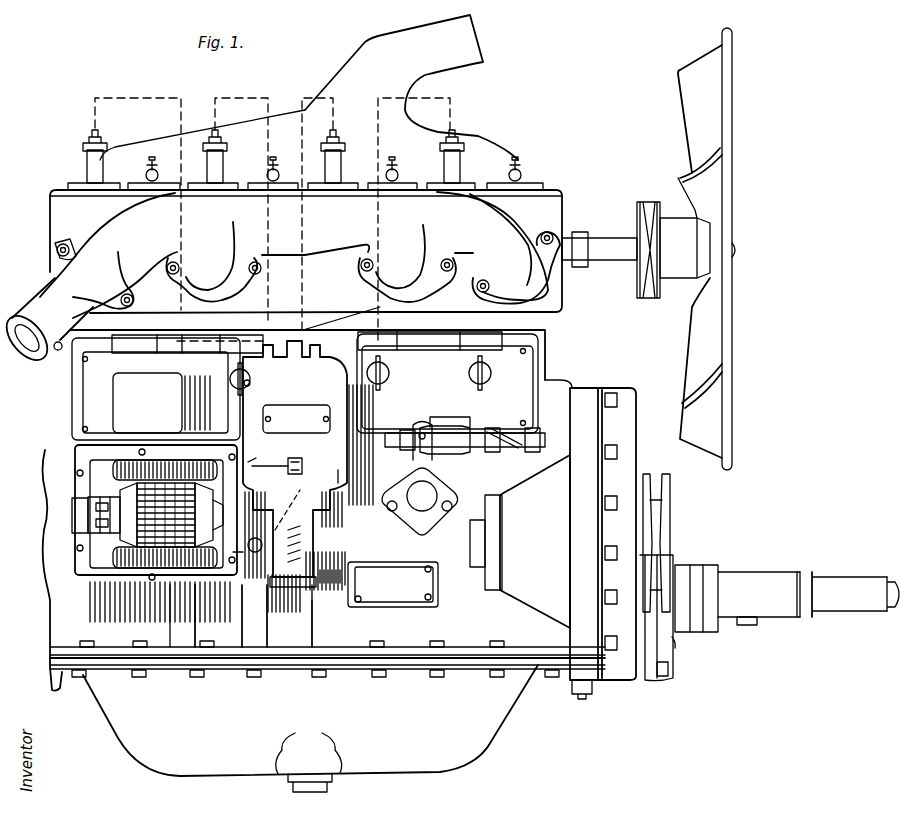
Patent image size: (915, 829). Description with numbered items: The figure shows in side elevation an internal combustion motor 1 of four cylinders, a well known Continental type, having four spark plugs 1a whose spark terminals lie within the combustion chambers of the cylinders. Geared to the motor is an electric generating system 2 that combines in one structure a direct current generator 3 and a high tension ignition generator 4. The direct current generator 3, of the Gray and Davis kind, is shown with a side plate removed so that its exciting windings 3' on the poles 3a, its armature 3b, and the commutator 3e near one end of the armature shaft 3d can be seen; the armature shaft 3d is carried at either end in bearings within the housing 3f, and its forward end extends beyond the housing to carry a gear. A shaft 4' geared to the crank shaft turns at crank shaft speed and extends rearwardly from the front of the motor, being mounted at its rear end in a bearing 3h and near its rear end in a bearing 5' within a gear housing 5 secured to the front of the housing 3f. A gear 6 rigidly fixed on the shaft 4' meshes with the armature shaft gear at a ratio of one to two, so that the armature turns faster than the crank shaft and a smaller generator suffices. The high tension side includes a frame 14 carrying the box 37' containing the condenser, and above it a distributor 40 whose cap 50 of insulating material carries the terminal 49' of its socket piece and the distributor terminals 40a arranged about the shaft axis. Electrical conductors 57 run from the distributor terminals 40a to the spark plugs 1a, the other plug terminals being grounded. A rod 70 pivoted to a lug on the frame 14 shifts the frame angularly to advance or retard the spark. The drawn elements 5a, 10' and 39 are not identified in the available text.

The internal combustion motor 1 is at (46, 220).
The spark plug 1a is at (98, 158).
The electrical conductor 57 is at (140, 90).
The electric generating system 2 is at (72, 541).
The direct current generator 3 is at (105, 529).
The exciting winding 3' is at (142, 522).
The pole 3a is at (196, 482).
The armature 3b is at (95, 500).
The armature shaft 3d is at (249, 462).
The commutator 3e is at (90, 512).
The housing 3f is at (82, 460).
The bearing 3h is at (208, 616).
The high tension ignition generator 4 is at (432, 476).
The shaft 4' is at (513, 541).
The gear housing 5 is at (248, 616).
The bearing 5' is at (330, 623).
The bearing wall 5a is at (279, 616).
The gear 6 is at (212, 525).
The adjusting screw 10' is at (328, 473).
The frame 14 is at (345, 415).
The box 37' is at (296, 419).
The timer contact 39 is at (273, 504).
The distributor 40 is at (360, 375).
The distributor terminal 40a is at (275, 336).
The terminal 49' is at (341, 309).
The distributor cap 50 is at (245, 383).
The rod 70 is at (278, 470).